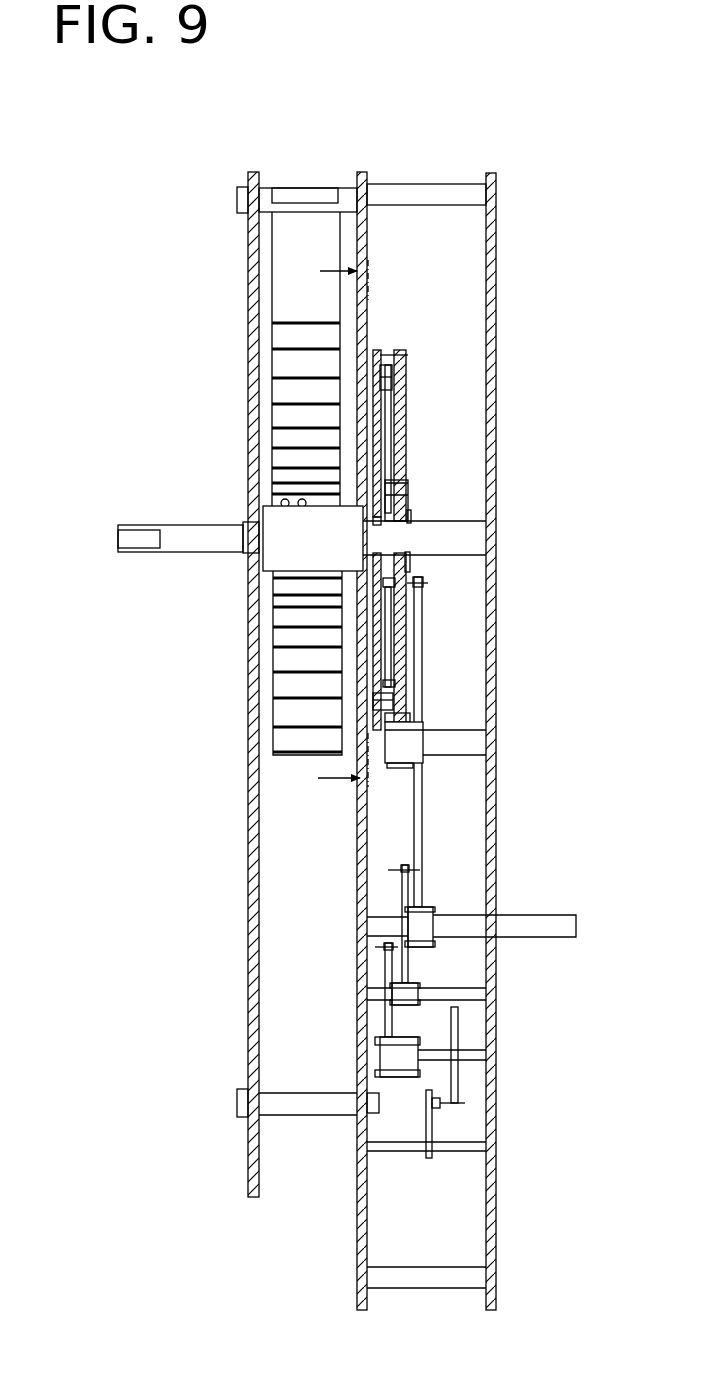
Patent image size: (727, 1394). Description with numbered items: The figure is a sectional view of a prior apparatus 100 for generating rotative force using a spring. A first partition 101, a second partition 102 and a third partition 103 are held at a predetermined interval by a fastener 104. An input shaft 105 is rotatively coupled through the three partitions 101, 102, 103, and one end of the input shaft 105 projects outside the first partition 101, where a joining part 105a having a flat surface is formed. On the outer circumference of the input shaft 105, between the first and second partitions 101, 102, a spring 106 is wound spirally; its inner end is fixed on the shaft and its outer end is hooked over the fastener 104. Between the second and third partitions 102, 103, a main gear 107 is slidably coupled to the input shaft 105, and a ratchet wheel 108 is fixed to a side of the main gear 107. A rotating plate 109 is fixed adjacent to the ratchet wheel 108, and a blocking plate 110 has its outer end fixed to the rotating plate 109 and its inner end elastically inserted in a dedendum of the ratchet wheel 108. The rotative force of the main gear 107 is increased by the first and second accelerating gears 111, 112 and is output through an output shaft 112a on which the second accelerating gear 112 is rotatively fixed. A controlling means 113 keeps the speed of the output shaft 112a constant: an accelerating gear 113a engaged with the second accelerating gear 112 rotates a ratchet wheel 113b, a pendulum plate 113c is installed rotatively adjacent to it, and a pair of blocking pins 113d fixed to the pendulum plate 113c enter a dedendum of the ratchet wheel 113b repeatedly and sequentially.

The apparatus 100 is at (101, 167).
The first partition 101 is at (252, 184).
The second partition 102 is at (362, 178).
The third partition 103 is at (492, 178).
The fastener 104 is at (346, 197).
The input shaft 105 is at (180, 563).
The joining part 105a is at (138, 542).
The spring 106 is at (282, 263).
The main gear 107 is at (405, 417).
The ratchet wheel 108 is at (388, 503).
The rotating plate 109 is at (378, 350).
The blocking plate 110 is at (387, 388).
The first accelerating gear 111 is at (395, 775).
The second accelerating gear 112 is at (476, 883).
The output shaft 112a is at (535, 920).
The controlling means 113 is at (510, 1011).
The accelerating gear 113a is at (420, 983).
The ratchet wheel 113b is at (455, 1020).
The pendulum plate 113c is at (502, 1124).
The blocking pin 113d is at (465, 1103).